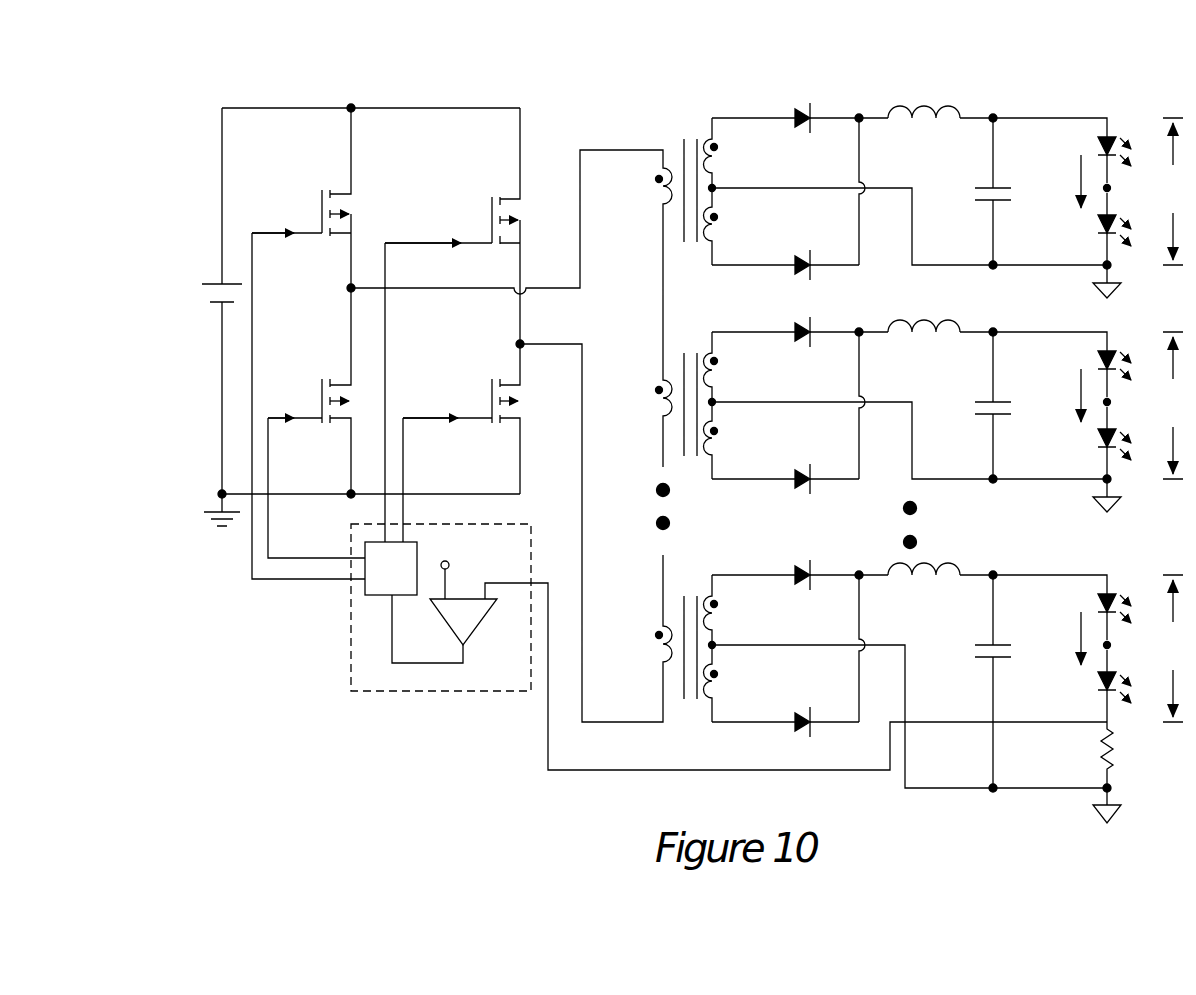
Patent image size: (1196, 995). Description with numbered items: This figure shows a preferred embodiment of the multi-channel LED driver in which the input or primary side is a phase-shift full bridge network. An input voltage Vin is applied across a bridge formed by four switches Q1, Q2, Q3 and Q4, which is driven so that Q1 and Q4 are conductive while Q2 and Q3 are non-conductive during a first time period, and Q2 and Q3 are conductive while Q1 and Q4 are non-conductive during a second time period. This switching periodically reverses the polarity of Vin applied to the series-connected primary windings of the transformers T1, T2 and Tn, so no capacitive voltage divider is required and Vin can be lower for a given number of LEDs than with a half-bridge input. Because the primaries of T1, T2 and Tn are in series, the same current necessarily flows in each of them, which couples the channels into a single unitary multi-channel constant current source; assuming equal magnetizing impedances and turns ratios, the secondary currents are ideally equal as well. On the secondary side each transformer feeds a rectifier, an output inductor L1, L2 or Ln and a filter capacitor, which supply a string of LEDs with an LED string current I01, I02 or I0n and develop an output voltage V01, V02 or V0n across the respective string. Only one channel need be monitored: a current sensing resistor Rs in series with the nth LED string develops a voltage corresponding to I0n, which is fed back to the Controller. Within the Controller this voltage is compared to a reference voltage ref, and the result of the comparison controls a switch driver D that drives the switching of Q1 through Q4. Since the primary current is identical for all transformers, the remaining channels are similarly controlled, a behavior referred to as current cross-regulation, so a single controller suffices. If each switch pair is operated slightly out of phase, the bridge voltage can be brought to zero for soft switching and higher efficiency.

The input voltage Vin is at (205, 295).
The switch Q1 is at (301, 198).
The switch Q2 is at (452, 226).
The switch Q3 is at (309, 391).
The switch Q4 is at (461, 419).
The controller Controller is at (679, 501).
The switch driver D is at (391, 568).
The reference voltage ref is at (445, 569).
The transformer T1 is at (697, 188).
The transformer T2 is at (697, 402).
The transformer Tn is at (697, 646).
The output inductor L1 is at (924, 126).
The output inductor L2 is at (924, 340).
The output inductor Ln is at (924, 583).
The LED string current of the first channel I01 is at (1062, 181).
The LED string current of the second channel I02 is at (1062, 395).
The LED string current of the nth channel I0n is at (1061, 638).
The output voltage of the first channel V01 is at (1170, 191).
The output voltage of the second channel V02 is at (1170, 405).
The output voltage of the nth channel V0n is at (1166, 648).
The current sensing resistor Rs is at (1124, 763).